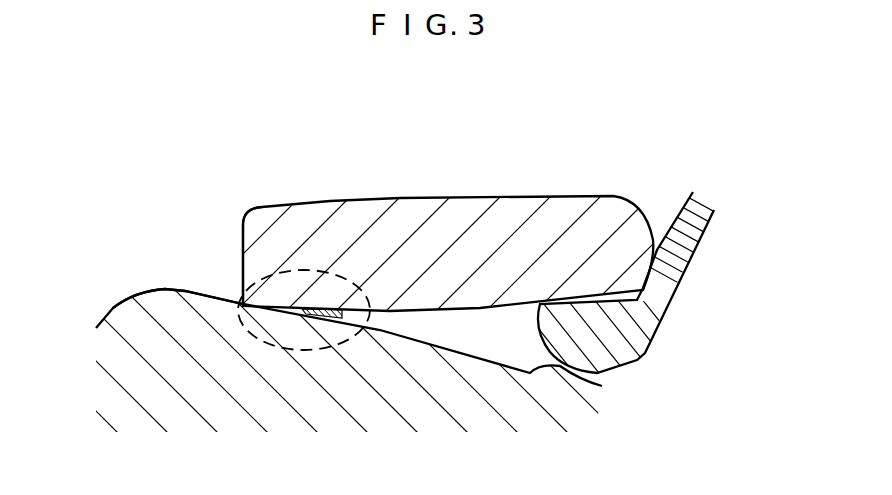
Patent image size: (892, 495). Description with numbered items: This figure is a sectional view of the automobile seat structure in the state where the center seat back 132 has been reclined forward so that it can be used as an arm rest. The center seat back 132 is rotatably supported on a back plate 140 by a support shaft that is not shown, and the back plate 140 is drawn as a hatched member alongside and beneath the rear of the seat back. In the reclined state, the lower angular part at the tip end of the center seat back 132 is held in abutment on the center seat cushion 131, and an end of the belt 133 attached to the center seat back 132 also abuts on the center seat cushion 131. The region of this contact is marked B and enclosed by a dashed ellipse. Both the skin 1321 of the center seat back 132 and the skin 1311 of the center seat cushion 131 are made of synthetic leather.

The center seat cushion 131 is at (140, 332).
The skin of the center seat cushion 1311 is at (193, 293).
The center seat back 132 is at (468, 212).
The skin of the center seat back 1321 is at (243, 301).
The belt 133 is at (342, 314).
The back plate 140 is at (680, 258).
The region B is at (270, 342).